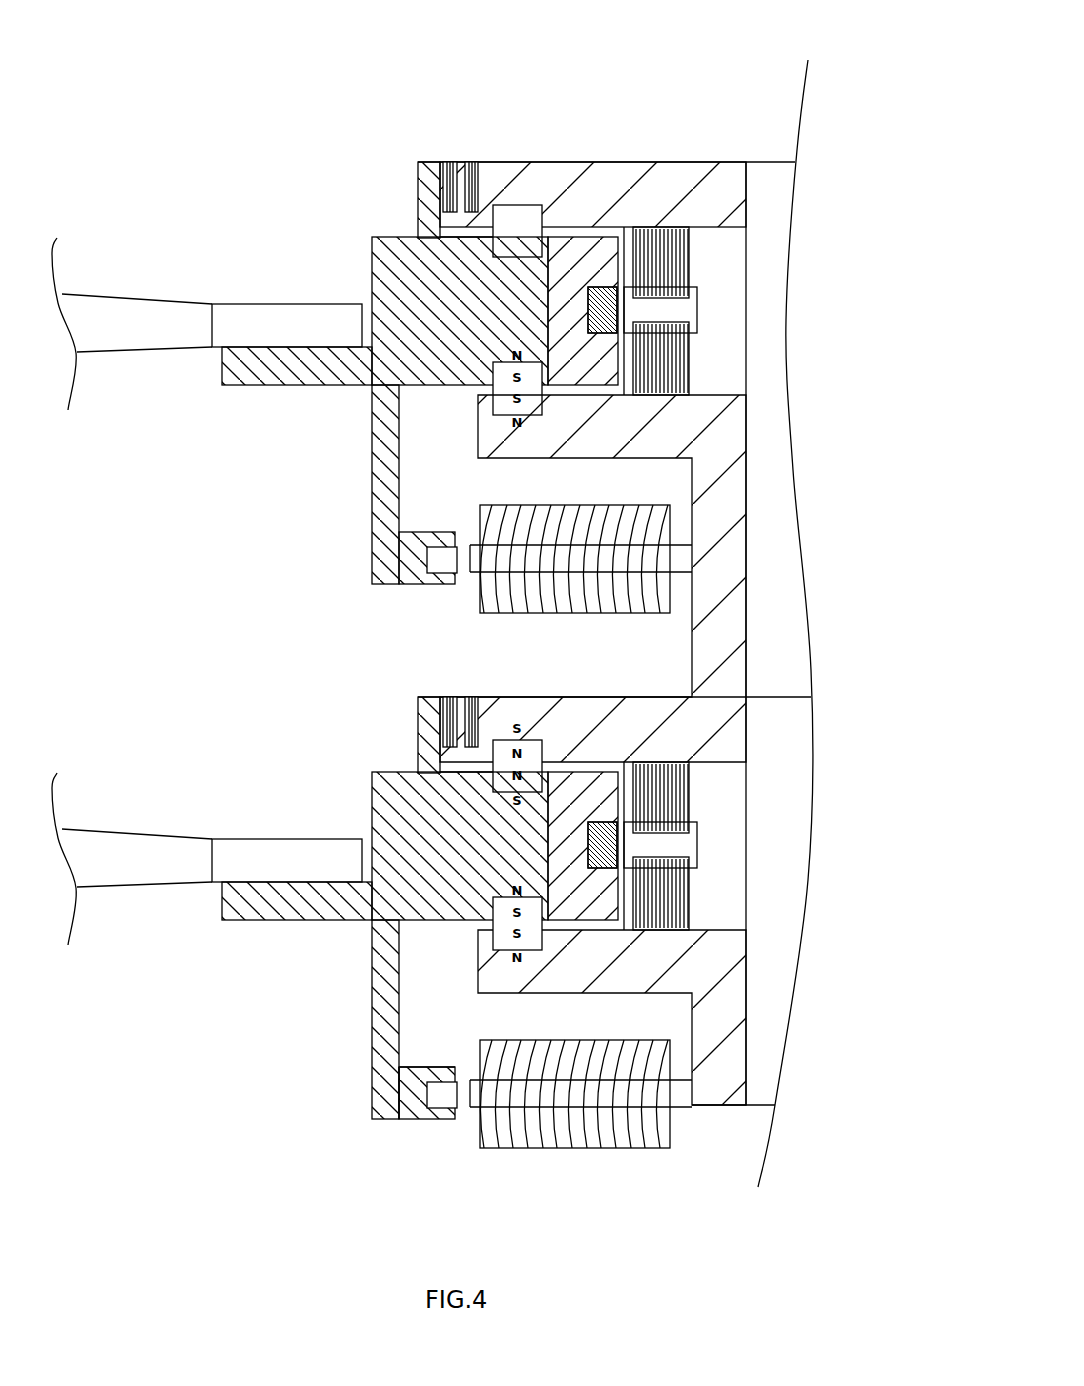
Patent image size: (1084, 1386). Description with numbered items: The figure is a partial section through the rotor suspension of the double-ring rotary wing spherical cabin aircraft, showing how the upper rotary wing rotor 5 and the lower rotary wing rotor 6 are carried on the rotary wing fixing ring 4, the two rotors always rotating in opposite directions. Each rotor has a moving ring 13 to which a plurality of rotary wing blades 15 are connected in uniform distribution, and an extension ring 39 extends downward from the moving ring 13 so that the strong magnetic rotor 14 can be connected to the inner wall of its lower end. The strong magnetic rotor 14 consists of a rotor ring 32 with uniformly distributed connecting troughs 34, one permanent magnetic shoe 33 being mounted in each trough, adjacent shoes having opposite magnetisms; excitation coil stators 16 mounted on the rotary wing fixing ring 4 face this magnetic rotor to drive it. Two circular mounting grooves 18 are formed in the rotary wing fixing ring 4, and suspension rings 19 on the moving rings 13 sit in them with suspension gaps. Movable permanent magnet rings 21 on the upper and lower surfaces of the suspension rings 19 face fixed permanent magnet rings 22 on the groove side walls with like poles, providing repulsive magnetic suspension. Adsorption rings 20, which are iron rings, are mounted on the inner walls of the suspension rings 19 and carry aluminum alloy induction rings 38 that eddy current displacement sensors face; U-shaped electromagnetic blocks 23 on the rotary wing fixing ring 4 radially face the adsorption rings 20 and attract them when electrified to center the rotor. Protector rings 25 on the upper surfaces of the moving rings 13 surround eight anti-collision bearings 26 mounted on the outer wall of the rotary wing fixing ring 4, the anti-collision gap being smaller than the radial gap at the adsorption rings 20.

The rotary wing fixing ring 4 is at (718, 433).
The upper rotary wing rotor 5 is at (352, 280).
The lower rotary wing rotor 6 is at (352, 815).
The moving ring 13 is at (383, 352).
The strong magnetic rotor 14 is at (413, 563).
The rotary wing blades 15 is at (193, 858).
The excitation coil stators 16 is at (600, 588).
The circular mounting grooves 18 is at (575, 232).
The suspension rings 19 is at (453, 260).
The adsorption rings 20 is at (562, 300).
The movable permanent magnet rings 21 is at (500, 248).
The fixed permanent magnet rings 22 is at (524, 207).
The electromagnetic blocks 23 is at (702, 273).
The protector rings 25 is at (512, 300).
The anti-collision bearings 26 is at (470, 167).
The rotor ring 32 is at (422, 1102).
The permanent magnetic shoes 33 is at (448, 1093).
The connecting troughs 34 is at (427, 1080).
The aluminum alloy induction rings 38 is at (595, 298).
The extension ring 39 is at (385, 480).